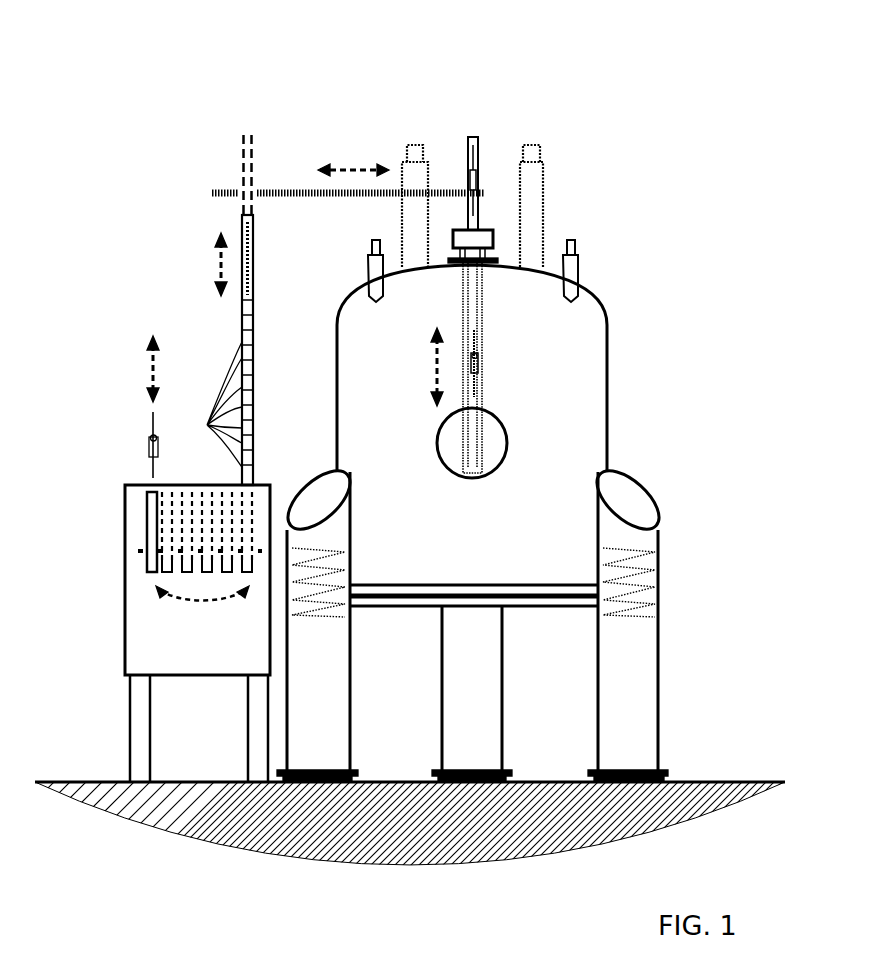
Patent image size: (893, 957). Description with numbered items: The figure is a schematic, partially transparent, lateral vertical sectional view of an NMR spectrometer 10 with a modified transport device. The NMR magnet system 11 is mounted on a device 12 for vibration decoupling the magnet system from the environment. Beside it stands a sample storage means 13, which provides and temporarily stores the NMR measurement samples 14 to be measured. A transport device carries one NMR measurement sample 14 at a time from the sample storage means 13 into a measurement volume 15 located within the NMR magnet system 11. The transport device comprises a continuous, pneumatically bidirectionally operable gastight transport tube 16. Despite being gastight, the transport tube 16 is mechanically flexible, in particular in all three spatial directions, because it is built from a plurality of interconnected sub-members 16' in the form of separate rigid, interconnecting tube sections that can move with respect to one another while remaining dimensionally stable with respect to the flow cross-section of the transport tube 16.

The NMR spectrometer 10 is at (622, 85).
The NMR magnet system 11 is at (540, 348).
The device for vibration decoupling 12 is at (650, 560).
The sample storage means 13 is at (127, 505).
The NMR measurement sample 14 is at (477, 370).
The measurement volume 15 is at (507, 442).
The transport tube 16 is at (148, 310).
The sub-members 16' is at (213, 404).